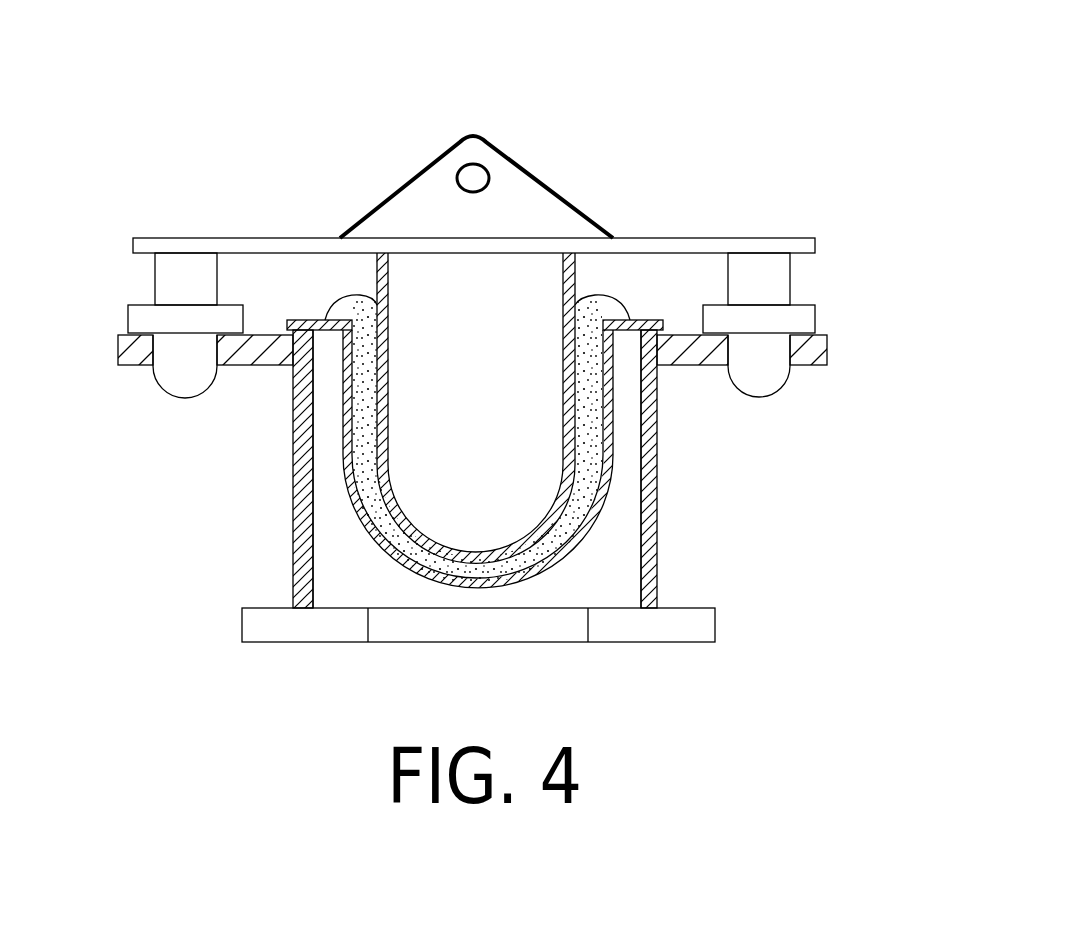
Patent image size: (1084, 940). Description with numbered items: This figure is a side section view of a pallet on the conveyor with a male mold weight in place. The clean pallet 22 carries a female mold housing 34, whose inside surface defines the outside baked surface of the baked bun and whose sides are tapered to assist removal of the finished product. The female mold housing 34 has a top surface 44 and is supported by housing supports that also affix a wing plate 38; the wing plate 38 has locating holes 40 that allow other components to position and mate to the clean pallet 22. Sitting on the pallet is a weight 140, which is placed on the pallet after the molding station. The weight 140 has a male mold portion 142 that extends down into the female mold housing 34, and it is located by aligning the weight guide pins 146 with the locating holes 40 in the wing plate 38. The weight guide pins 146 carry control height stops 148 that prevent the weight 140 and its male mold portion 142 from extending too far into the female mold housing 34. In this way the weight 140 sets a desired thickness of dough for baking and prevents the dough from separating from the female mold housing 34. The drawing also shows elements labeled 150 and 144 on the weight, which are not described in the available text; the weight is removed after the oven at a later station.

The weight 140 is at (266, 135).
The lifting lug 150 is at (480, 170).
The top plate 144 is at (763, 237).
The male mold portion 142 is at (575, 277).
The top surface 44 is at (647, 317).
The weight guide pins 146 is at (792, 280).
The control height stops 148 is at (817, 320).
The wing plate 38 is at (118, 349).
The locating holes 40 is at (788, 377).
The clean pallet 22 is at (260, 490).
The female mold housing 34 is at (627, 534).